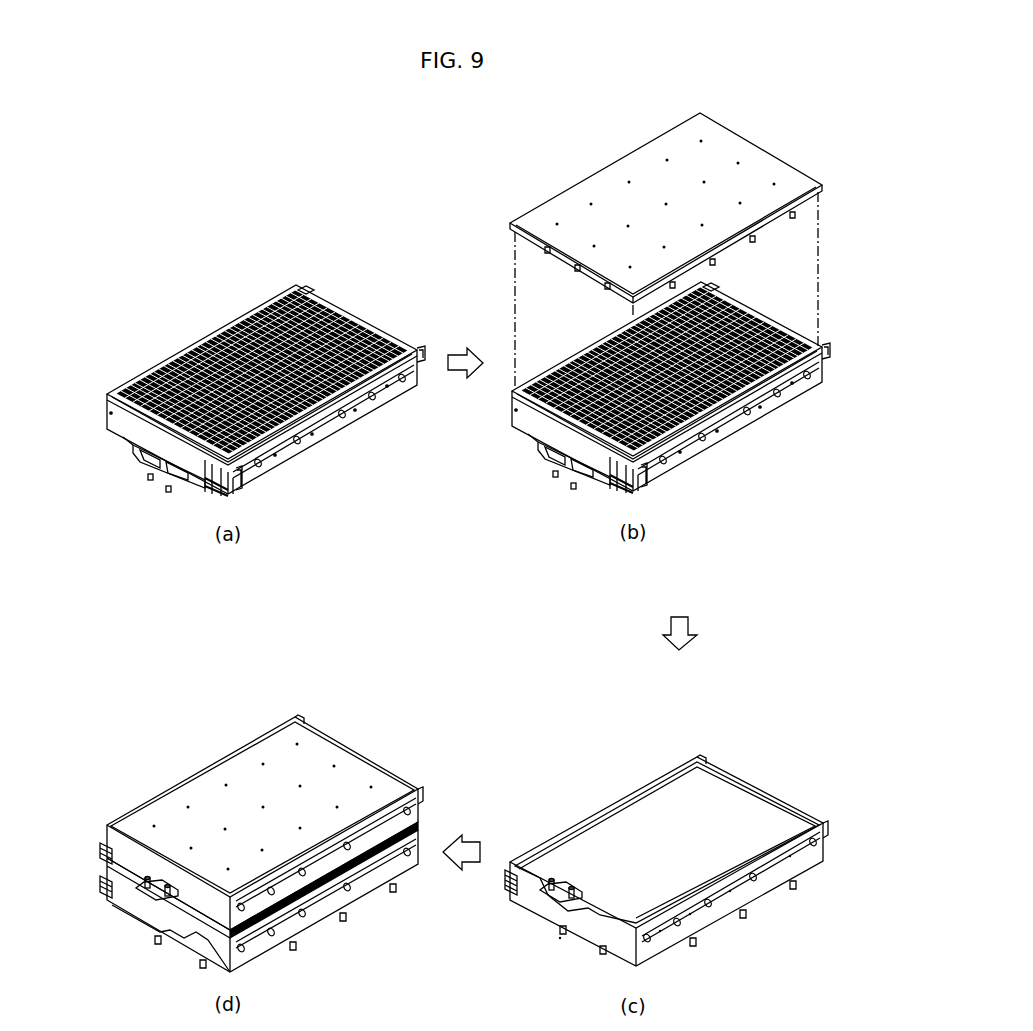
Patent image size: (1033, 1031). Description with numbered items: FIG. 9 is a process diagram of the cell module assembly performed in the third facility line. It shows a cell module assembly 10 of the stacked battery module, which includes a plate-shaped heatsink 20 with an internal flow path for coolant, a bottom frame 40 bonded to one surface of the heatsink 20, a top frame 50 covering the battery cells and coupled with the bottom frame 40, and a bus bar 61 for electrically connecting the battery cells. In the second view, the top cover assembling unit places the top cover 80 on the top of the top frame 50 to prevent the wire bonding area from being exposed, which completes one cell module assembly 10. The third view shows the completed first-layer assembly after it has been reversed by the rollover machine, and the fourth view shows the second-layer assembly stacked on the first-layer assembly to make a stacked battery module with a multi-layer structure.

The cell module assembly 10 is at (464, 843).
The heatsink 20 is at (133, 448).
The bottom frame 40 is at (107, 418).
The top frame 50 is at (107, 392).
The bus bar 61 is at (187, 357).
The top cover 80 is at (612, 172).